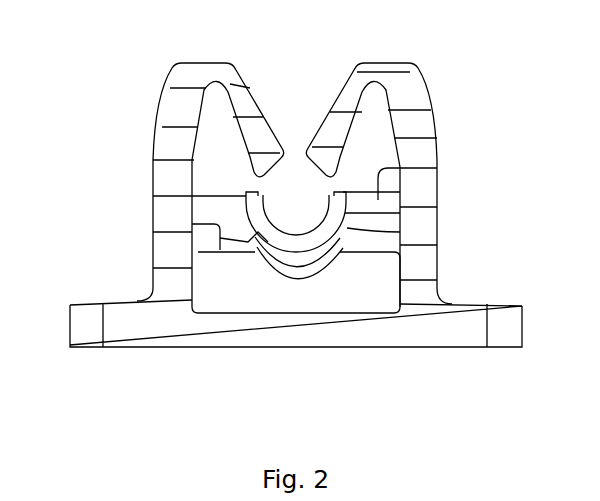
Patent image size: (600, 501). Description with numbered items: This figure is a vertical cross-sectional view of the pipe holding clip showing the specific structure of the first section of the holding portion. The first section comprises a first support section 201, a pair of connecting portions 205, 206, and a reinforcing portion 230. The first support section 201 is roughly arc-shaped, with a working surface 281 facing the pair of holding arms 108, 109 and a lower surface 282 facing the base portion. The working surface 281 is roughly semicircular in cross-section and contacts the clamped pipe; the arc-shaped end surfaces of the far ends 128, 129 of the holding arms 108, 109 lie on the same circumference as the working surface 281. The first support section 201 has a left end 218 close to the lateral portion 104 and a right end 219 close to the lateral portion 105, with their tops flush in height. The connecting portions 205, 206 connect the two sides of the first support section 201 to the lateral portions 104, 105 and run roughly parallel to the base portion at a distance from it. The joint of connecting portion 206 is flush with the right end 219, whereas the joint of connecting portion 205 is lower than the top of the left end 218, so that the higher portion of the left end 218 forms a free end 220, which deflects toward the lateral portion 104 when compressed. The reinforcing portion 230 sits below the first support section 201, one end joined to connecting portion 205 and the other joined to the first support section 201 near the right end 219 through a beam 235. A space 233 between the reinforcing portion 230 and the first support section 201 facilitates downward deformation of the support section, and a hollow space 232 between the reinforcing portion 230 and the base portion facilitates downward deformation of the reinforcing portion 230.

The lateral portion 104 is at (167, 252).
The lateral portion 105 is at (420, 267).
The holding arm 108 is at (243, 103).
The holding arm 109 is at (345, 93).
The far end 128 is at (245, 133).
The far end 129 is at (327, 153).
The first support section 201 is at (343, 245).
The connecting portion 205 is at (153, 232).
The connecting portion 206 is at (388, 168).
The first support section left end 218 is at (247, 172).
The first support section right end 219 is at (350, 207).
The free end 220 is at (153, 196).
The reinforcing portion 230 is at (267, 260).
The hollow space 232 is at (277, 277).
The space 233 is at (243, 253).
The beam 235 is at (367, 250).
The working surface 281 is at (437, 250).
The lower surface 282 is at (302, 243).